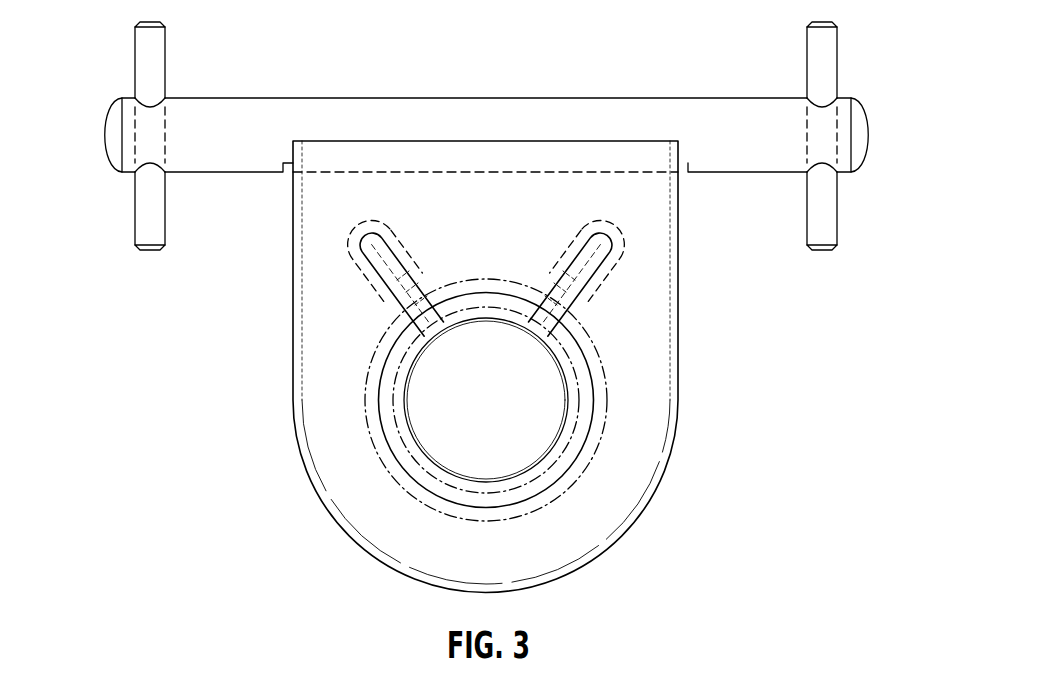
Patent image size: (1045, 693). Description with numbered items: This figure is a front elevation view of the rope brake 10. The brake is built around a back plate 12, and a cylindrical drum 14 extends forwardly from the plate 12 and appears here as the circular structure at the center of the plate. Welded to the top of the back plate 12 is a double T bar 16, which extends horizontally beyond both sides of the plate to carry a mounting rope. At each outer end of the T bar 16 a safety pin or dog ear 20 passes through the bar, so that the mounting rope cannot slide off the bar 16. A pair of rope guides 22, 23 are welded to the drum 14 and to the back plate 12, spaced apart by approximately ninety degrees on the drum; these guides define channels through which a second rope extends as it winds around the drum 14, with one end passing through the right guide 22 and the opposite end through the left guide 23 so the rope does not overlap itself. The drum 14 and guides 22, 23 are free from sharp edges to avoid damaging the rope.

The rope brake 10 is at (198, 440).
The back plate 12 is at (650, 332).
The cylindrical drum 14 is at (562, 478).
The double T bar 16 is at (763, 112).
The safety pin 20 is at (135, 55).
The rope guide 22 is at (427, 303).
The rope guide 23 is at (545, 303).